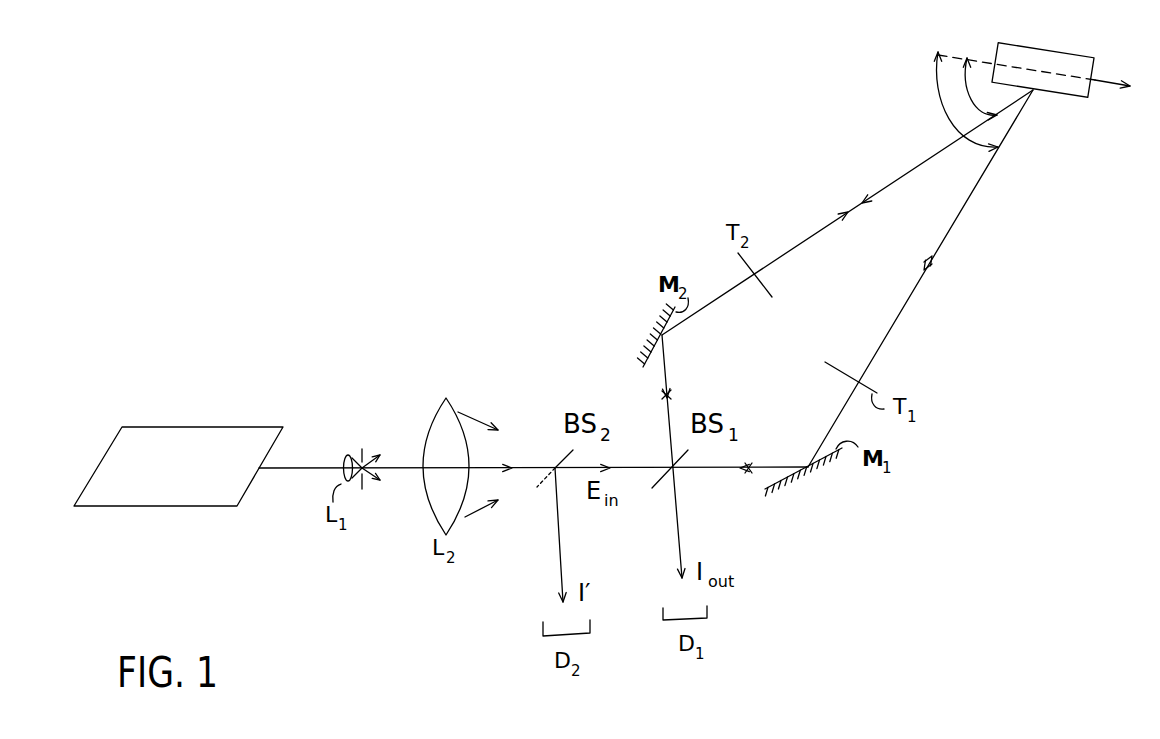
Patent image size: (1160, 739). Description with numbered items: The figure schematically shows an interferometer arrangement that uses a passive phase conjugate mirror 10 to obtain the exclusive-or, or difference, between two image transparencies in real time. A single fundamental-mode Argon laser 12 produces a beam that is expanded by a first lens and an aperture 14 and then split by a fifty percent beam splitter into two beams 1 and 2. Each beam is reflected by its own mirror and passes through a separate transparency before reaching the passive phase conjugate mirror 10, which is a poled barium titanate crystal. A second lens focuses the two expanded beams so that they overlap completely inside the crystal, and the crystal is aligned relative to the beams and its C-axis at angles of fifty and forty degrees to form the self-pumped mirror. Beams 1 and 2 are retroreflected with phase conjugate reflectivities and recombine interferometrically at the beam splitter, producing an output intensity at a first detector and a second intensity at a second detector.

The beam 1 is at (893, 327).
The beam 2 is at (830, 222).
The passive phase conjugate mirror 10 is at (1077, 100).
The Argon laser 12 is at (200, 427).
The aperture 14 is at (362, 448).